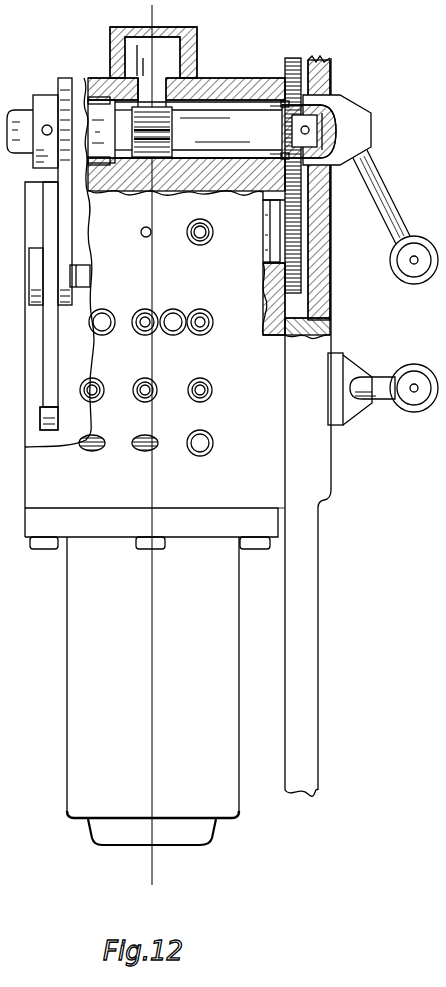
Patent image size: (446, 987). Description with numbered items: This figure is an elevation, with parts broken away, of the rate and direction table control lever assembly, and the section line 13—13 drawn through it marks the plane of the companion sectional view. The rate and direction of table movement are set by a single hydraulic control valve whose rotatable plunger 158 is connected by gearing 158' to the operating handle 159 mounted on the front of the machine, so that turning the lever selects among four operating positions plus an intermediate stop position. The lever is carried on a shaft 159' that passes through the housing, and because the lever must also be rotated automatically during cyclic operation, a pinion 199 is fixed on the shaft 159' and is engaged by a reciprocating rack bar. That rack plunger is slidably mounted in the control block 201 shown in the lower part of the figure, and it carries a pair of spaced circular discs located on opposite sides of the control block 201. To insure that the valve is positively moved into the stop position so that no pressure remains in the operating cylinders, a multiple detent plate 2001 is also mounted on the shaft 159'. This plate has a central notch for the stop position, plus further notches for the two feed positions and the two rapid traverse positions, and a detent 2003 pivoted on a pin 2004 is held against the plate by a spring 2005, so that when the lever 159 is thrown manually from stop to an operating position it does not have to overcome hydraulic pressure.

The section line 13— 13 is at (157, 13).
The pinion 199 is at (182, 84).
The shaft 159' is at (188, 117).
The operating handle 159 is at (360, 189).
The gearing 158' is at (329, 175).
The rotatable plunger 158 is at (250, 242).
The multiple detent plate 2001 is at (65, 78).
The detent 2003 is at (62, 213).
The pin 2004 is at (80, 266).
The spring 2005 is at (50, 406).
The control block 201 is at (222, 615).